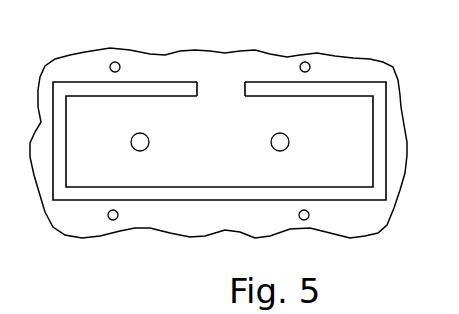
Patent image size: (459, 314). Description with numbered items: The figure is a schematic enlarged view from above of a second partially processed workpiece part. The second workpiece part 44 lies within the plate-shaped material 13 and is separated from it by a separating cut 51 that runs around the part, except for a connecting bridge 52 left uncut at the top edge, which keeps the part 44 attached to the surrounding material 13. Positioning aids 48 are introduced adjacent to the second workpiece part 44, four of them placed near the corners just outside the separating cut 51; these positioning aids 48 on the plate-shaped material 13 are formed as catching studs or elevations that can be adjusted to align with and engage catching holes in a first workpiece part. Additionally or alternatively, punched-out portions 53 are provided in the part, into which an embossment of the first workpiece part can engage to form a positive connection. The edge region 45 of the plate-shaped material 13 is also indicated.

The plate-shaped material 13 is at (411, 127).
The second workpiece part 44 is at (185, 168).
The panel edge 45 is at (85, 223).
The positioning aids 48 is at (115, 62).
The separating cut 51 is at (353, 92).
The connecting bridge 52 is at (218, 90).
The punched-out portions 53 is at (140, 151).